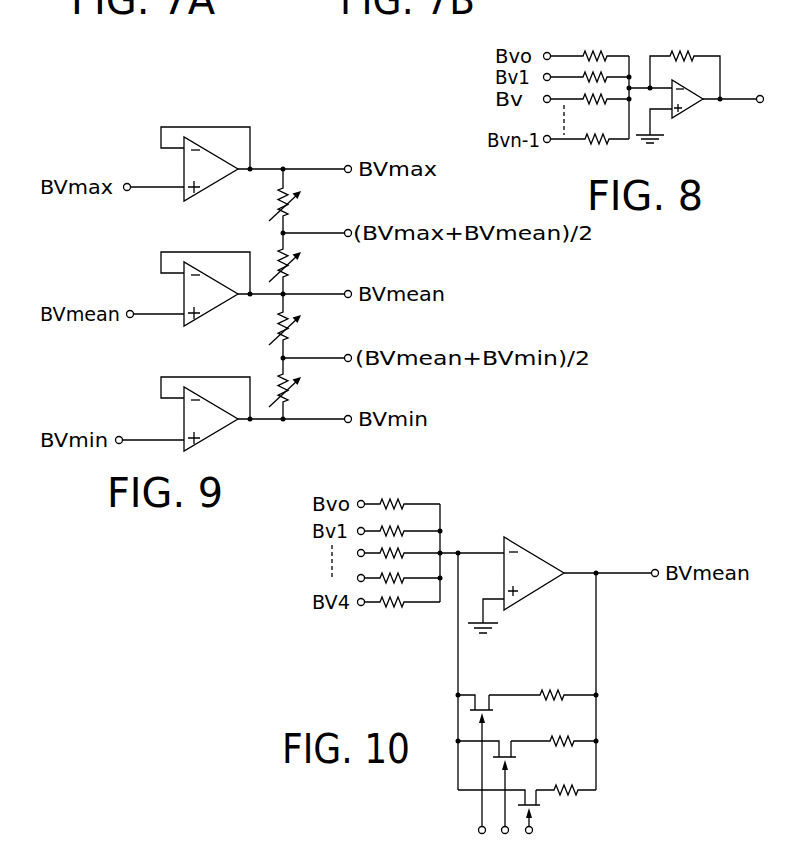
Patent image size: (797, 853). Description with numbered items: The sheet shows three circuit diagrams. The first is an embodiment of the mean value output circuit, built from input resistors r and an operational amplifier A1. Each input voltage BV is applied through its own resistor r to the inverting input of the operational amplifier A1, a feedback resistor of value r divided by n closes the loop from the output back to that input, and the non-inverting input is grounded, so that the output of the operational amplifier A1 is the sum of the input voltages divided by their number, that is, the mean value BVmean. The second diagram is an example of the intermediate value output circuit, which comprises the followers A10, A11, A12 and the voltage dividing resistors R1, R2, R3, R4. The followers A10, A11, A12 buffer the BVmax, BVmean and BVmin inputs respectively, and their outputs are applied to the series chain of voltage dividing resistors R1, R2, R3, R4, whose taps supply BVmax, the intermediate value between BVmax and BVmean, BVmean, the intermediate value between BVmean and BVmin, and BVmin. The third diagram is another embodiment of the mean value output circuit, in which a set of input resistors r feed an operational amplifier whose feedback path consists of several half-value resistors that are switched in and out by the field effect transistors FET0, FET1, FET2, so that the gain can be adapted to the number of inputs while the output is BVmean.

In FIG. 8, the resistor r is at (594, 49).
In FIG. 10, the resistor r is at (402, 496).
In FIG. 8, the operational amplifier A1 is at (688, 111).
In FIG. 9, the follower A10 is at (211, 188).
In FIG. 9, the follower A11 is at (211, 313).
In FIG. 9, the follower A12 is at (212, 434).
In FIG. 9, the voltage dividing resistor R1 is at (296, 205).
In FIG. 9, the voltage dividing resistor R2 is at (296, 265).
In FIG. 9, the voltage dividing resistor R3 is at (296, 329).
In FIG. 9, the voltage dividing resistor R4 is at (296, 387).
In FIG. 10, the field effect transistor switch FET0 is at (540, 806).
In FIG. 10, the field effect transistor switch FET1 is at (516, 758).
In FIG. 10, the field effect transistor switch FET2 is at (483, 703).